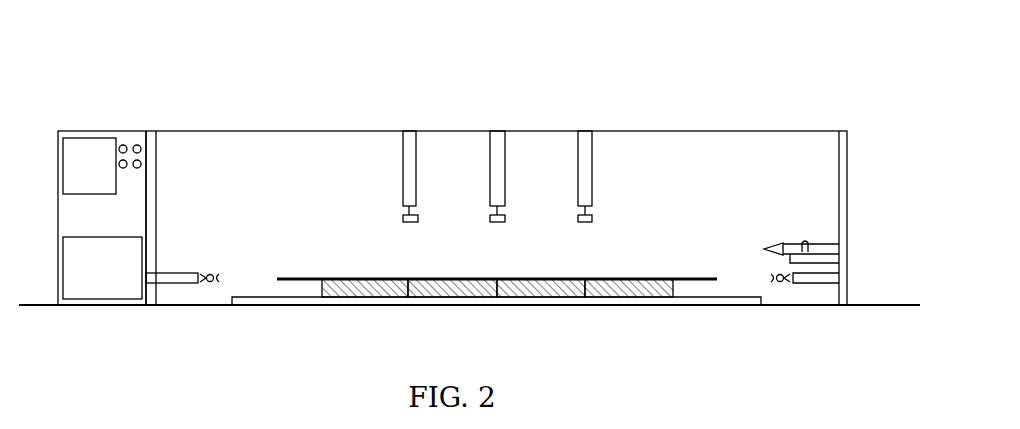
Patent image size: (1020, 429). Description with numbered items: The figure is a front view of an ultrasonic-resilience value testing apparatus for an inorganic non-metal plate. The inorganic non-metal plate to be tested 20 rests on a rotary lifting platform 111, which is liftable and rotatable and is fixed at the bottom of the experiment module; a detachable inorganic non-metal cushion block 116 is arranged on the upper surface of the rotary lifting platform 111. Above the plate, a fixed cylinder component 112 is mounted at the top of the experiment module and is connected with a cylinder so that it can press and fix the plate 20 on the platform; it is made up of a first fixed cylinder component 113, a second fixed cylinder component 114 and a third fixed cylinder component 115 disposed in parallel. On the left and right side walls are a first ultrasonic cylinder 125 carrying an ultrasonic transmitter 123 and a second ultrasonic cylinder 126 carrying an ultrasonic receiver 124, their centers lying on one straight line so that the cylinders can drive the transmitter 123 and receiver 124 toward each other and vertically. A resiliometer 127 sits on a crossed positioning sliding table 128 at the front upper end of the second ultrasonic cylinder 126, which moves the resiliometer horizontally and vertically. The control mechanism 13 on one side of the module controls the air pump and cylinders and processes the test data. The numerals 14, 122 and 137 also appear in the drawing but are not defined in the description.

The control mechanism 13 is at (92, 167).
The control cabinet 14 is at (107, 260).
The inorganic non-metal plate to be tested 20 is at (698, 284).
The rotary lifting platform 111 is at (302, 299).
The fixed cylinder component 112 is at (432, 88).
The first fixed cylinder component 113 is at (411, 183).
The second fixed cylinder component 114 is at (497, 183).
The third fixed cylinder component 115 is at (585, 183).
The inorganic non-metal cushion block 116 is at (453, 298).
The conveying assembly 122 is at (841, 178).
The ultrasonic transmitter 123 is at (216, 284).
The ultrasonic receiver 124 is at (785, 283).
The first ultrasonic cylinder 125 is at (176, 283).
The second ultrasonic cylinder 126 is at (839, 273).
The resiliometer 127 is at (786, 246).
The crossed positioning sliding table 128 is at (840, 258).
The housing 137 is at (243, 131).